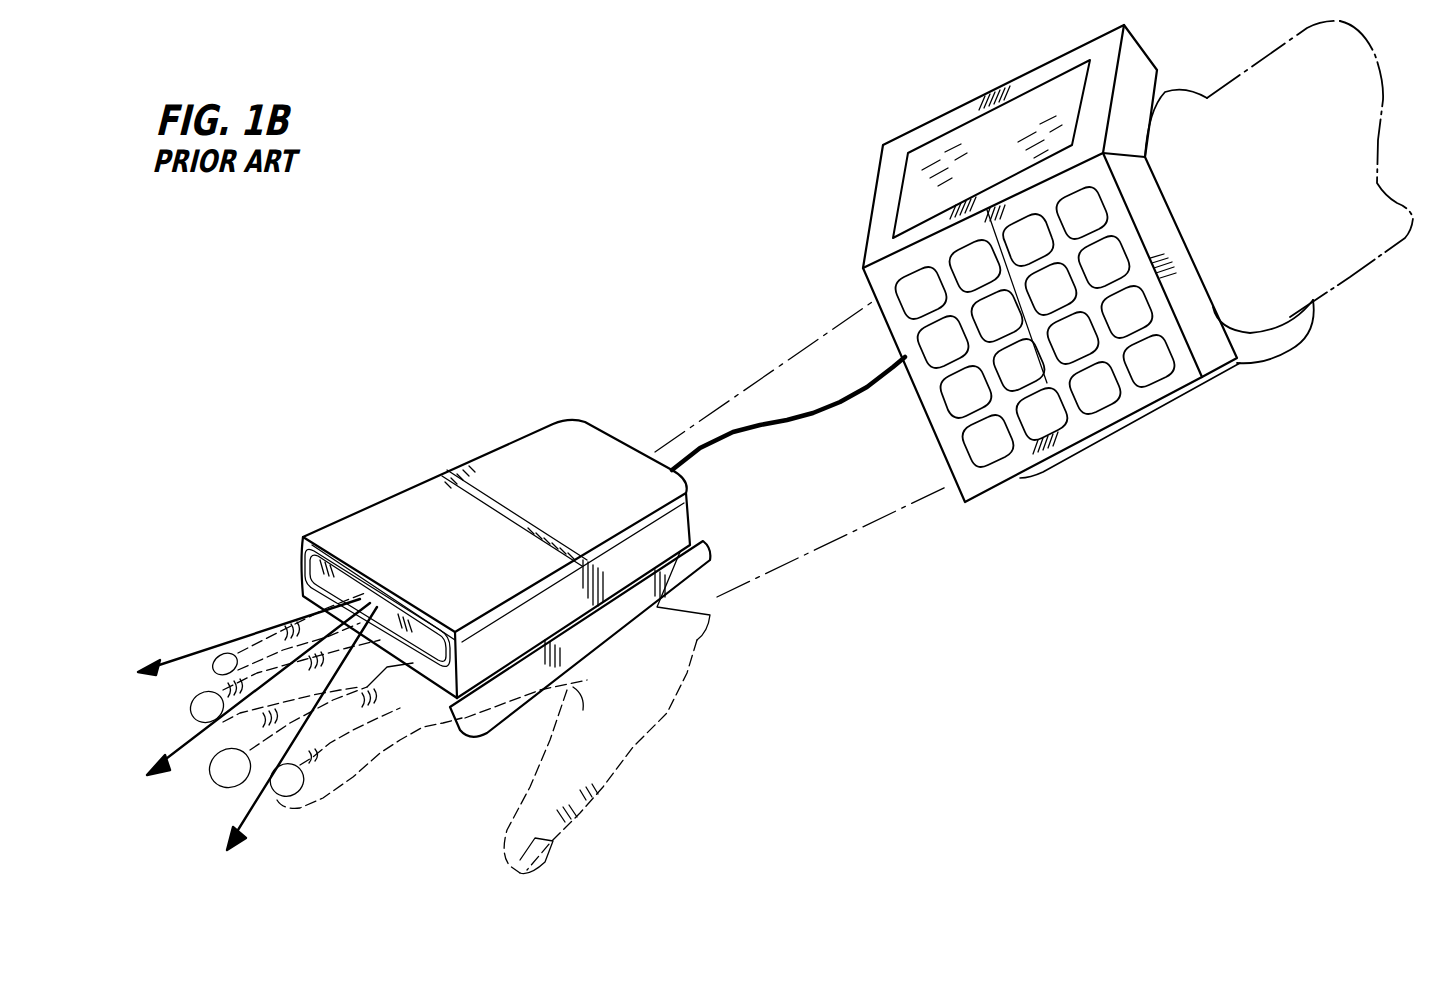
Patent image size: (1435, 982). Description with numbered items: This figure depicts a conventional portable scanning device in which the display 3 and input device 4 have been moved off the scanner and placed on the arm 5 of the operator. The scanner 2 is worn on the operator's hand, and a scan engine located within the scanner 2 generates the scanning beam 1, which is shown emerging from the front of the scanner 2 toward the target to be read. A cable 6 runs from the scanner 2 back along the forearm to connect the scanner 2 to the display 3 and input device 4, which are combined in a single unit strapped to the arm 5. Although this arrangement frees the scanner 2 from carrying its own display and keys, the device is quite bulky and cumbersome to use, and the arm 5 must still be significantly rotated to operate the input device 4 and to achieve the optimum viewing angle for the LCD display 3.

The scanning beam 1 is at (148, 710).
The scanner 2 is at (512, 468).
The display 3 is at (915, 205).
The input device 4 is at (1085, 398).
The arm 5 is at (1333, 247).
The cable 6 is at (747, 423).